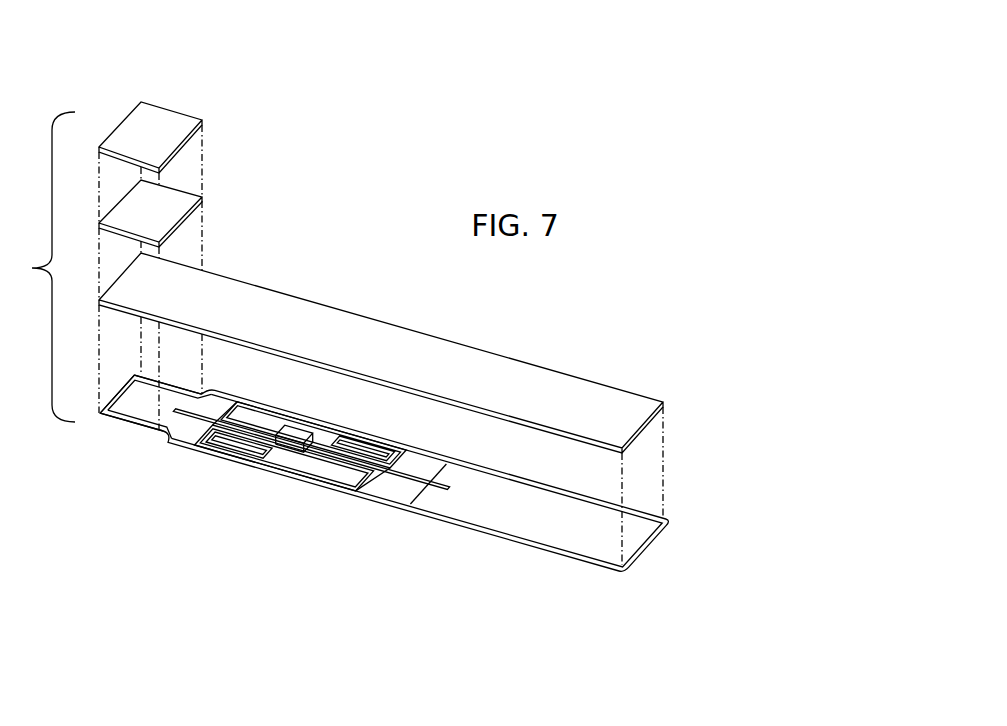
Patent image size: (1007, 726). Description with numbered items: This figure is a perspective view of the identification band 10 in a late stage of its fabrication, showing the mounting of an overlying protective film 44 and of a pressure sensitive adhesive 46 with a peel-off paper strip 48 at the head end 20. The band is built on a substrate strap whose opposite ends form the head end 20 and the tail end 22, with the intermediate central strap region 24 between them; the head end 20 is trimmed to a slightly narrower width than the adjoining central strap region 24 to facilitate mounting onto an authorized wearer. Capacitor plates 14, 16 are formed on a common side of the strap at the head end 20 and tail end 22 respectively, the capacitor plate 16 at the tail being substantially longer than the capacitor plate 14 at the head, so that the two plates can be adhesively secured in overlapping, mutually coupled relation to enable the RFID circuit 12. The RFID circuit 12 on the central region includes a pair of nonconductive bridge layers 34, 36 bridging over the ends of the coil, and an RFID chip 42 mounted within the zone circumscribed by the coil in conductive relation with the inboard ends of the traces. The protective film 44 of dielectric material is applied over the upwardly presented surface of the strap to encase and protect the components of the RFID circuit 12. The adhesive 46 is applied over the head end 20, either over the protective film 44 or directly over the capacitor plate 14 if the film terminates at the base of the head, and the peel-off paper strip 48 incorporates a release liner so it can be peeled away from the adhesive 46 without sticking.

The identification band 10 is at (710, 422).
The RFID circuit 12 is at (305, 478).
The capacitor plate 14 is at (128, 408).
The capacitor plate 16 is at (557, 528).
The head end 20 is at (130, 427).
The tail end 22 is at (640, 557).
The central strap region 24 is at (390, 495).
The nonconductive bridge layer 34 is at (205, 428).
The nonconductive bridge layer 36 is at (380, 473).
The RFID chip 42 is at (297, 438).
The protective film 44 is at (365, 330).
The pressure sensitive adhesive 46 is at (170, 203).
The peel-off paper strip 48 is at (160, 120).